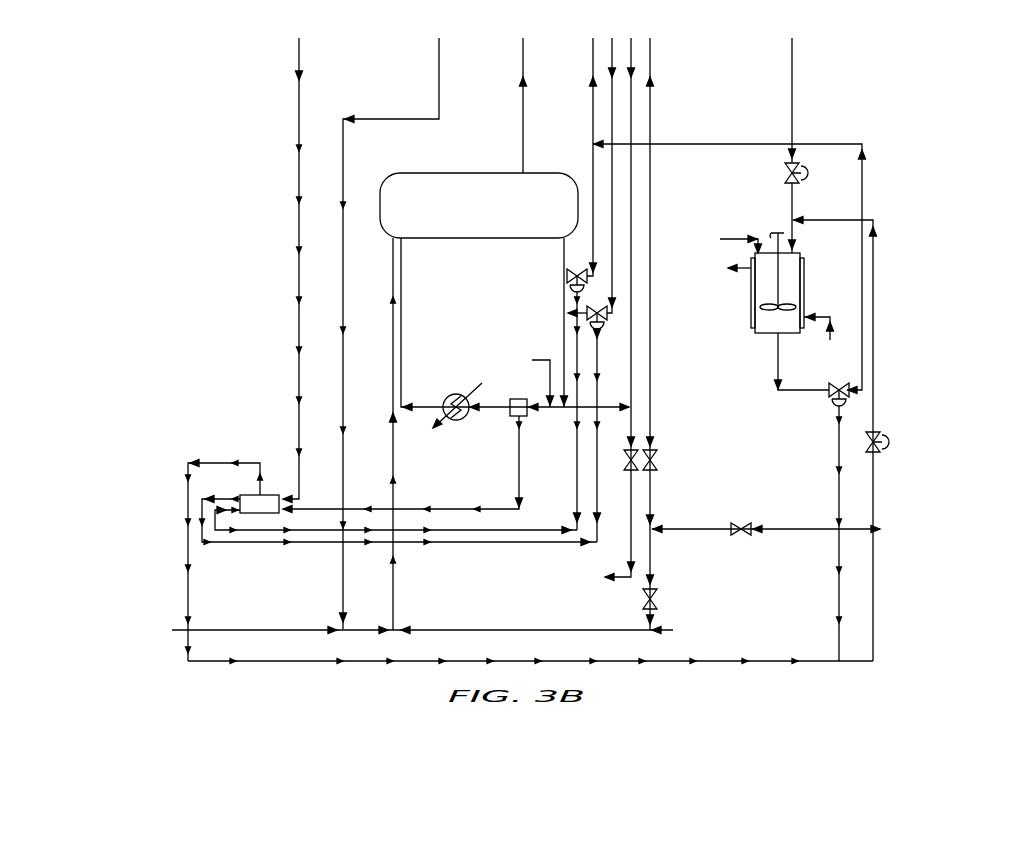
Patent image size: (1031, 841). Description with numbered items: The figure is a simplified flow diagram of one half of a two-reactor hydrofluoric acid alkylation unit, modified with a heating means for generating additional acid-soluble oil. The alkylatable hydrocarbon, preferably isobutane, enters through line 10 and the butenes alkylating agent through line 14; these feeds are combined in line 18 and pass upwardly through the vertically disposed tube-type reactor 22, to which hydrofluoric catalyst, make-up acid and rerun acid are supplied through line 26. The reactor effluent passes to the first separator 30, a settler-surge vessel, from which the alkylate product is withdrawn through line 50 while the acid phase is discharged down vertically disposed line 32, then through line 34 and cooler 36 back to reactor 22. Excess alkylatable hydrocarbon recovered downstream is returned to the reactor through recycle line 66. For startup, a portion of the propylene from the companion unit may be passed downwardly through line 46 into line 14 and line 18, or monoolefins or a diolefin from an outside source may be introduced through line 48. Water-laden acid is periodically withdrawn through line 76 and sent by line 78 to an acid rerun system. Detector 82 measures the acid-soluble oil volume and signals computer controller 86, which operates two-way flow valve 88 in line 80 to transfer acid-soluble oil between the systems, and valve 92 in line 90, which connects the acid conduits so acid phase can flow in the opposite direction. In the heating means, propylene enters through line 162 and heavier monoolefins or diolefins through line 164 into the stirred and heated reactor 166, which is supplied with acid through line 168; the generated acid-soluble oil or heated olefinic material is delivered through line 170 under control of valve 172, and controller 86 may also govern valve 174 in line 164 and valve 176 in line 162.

The alkylatable hydrocarbon feed line 10 is at (300, 633).
The alkylating agent feed line 14 is at (498, 632).
The combined feed line 18 is at (394, 586).
The tube-type reactor 22 is at (402, 306).
The catalyst introduction line 26 is at (533, 358).
The first separator 30 is at (479, 205).
The acid discharge line 32 is at (563, 292).
The acid line 34 is at (527, 416).
The cooler 36 is at (441, 428).
The propylene transfer line 46 is at (652, 110).
The outside olefin feed line 48 is at (750, 534).
The alkylate product line 50 is at (524, 110).
The recycle line 66 is at (440, 113).
The acid withdrawal line 76 is at (631, 100).
The acid rerun line 78 is at (628, 539).
The acid-soluble oil transfer line 80 is at (592, 96).
The detector 82 is at (527, 399).
The computer controller 86 is at (243, 494).
The flow valve 88 is at (577, 388).
The additional line 90 is at (611, 100).
The valve 92 is at (587, 414).
The propylene feed line 162 is at (793, 86).
The olefin feed line 164 is at (874, 362).
The stirred and heated reactor 166 is at (752, 326).
The acid supply line 168 is at (740, 237).
The acid-soluble oil line 170 is at (735, 143).
The control valve 172 is at (836, 402).
The valve 174 is at (889, 449).
The valve 176 is at (808, 180).